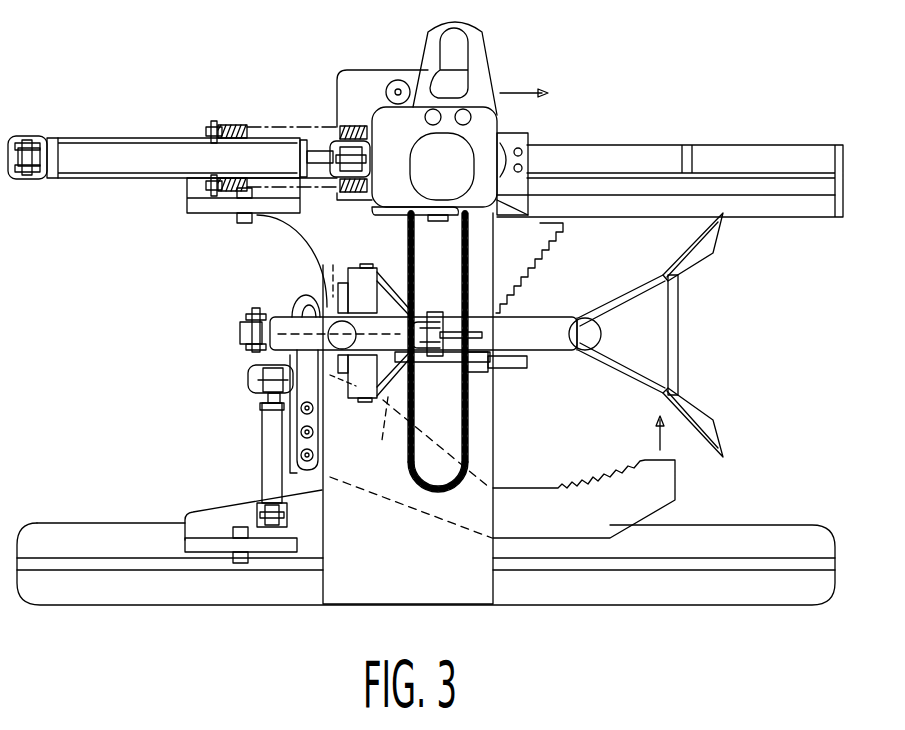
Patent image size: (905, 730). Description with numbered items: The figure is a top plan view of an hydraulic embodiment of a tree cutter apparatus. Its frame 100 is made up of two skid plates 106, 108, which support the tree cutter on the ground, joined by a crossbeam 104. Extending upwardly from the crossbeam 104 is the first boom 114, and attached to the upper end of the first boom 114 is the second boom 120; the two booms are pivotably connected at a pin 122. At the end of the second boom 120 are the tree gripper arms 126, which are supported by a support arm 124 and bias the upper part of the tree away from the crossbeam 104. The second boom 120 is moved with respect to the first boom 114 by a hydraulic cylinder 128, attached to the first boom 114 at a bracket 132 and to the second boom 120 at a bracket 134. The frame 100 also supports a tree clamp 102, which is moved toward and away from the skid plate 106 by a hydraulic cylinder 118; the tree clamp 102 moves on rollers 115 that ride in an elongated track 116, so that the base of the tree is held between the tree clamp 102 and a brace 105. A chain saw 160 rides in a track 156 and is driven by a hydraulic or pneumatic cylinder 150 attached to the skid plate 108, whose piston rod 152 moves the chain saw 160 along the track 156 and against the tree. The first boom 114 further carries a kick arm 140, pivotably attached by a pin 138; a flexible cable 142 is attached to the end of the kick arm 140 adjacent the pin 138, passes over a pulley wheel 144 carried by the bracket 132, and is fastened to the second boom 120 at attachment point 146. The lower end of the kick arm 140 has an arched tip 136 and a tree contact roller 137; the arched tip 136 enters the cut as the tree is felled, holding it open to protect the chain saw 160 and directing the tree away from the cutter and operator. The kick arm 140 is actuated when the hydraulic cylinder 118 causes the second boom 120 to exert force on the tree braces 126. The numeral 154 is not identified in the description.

The frame 100 is at (600, 605).
The tree clamp 102 is at (653, 490).
The crossbeam 104 is at (362, 585).
The brace 105 is at (560, 227).
The skid plate 106 is at (743, 593).
The skid plate 108 is at (840, 163).
The first boom 114 is at (410, 280).
The rollers 115 is at (300, 432).
The elongated track 116 is at (297, 295).
The hydraulic cylinder 118 is at (266, 454).
The second boom 120 is at (615, 300).
The pin 122 is at (362, 267).
The support arm 124 is at (617, 382).
The tree gripper arms 126 is at (725, 232).
The hydraulic cylinder 128 is at (277, 317).
The bracket 132 is at (313, 265).
The bracket 134 is at (483, 337).
The arched tip 136 is at (513, 370).
The tree contact roller 137 is at (475, 370).
The pin 138 is at (411, 467).
The kick arm 140 is at (442, 362).
The flexible cable 142 is at (333, 367).
The pulley wheel 144 is at (277, 357).
The attachment point 146 is at (413, 382).
The hydraulic or pneumatic cylinder 150 is at (120, 155).
The piston rod 152 is at (317, 153).
The shaft 154 is at (437, 243).
The track 156 is at (663, 203).
The chain saw 160 is at (482, 58).